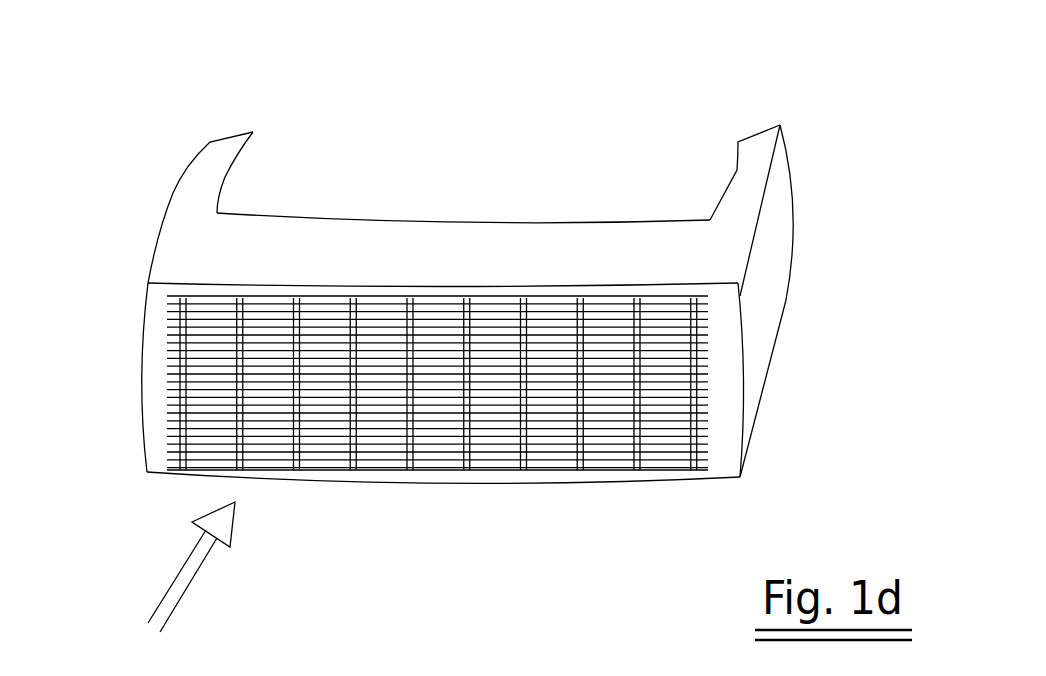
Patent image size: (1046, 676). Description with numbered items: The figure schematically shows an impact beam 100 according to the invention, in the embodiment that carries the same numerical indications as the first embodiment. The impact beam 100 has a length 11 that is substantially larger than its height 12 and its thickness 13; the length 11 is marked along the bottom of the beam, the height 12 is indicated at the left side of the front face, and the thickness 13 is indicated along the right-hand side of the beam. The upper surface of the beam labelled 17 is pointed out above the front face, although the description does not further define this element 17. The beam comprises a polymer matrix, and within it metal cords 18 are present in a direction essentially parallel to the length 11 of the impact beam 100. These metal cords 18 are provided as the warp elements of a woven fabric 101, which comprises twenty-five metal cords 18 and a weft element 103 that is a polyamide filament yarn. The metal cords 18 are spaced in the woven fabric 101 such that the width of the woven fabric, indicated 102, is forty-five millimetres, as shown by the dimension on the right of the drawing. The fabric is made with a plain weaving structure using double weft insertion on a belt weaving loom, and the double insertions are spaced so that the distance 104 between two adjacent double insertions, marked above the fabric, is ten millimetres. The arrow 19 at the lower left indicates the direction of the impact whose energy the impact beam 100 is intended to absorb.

The impact beam 100 is at (618, 134).
The top surface 17 is at (465, 192).
The thickness 13 is at (757, 280).
The metal cords 18 is at (437, 344).
The woven fabric 101 is at (549, 517).
The weft element 103 is at (333, 459).
The distance between two adjacent double insertions 104 is at (296, 300).
The height 12 is at (110, 295).
The width of the woven fabric 102 is at (700, 302).
The length 11 is at (728, 501).
The arrow 19 is at (199, 567).